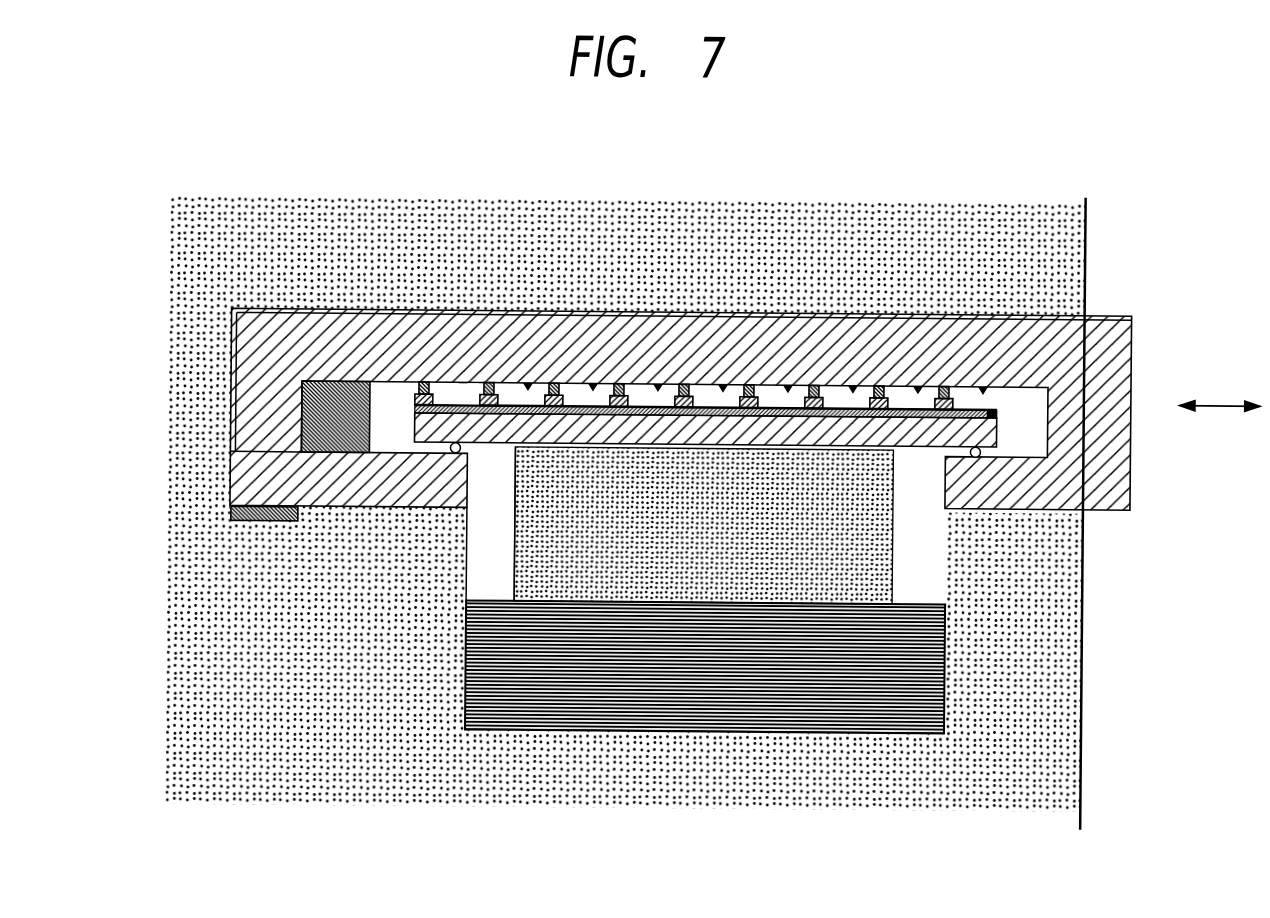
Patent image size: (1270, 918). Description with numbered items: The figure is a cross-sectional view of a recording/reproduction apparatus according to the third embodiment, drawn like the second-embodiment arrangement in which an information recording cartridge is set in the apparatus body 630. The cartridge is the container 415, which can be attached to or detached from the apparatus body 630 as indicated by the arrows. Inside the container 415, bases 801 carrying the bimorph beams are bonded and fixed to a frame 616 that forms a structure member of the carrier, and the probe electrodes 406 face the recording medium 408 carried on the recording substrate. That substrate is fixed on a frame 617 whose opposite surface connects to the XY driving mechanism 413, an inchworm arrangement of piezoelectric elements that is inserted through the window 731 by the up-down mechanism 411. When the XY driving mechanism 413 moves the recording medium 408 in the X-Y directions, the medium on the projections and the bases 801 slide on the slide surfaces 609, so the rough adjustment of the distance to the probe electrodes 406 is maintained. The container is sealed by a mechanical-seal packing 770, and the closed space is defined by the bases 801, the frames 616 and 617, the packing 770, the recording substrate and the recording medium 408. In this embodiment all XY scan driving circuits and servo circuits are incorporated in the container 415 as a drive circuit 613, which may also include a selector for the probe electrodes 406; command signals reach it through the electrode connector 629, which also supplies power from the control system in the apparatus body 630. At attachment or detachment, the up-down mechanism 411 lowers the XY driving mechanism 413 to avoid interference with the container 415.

The probe electrodes 406 is at (474, 382).
The recording medium 408 is at (793, 392).
The up-down mechanism 411 is at (932, 675).
The XY driving mechanism 413 is at (893, 548).
The container 415 is at (1130, 287).
The slide surfaces 609 is at (938, 384).
The drive circuit 613 is at (328, 384).
The frame 616 is at (1111, 339).
The frame 617 is at (996, 429).
The electrode connector 629 is at (232, 521).
The apparatus body 630 is at (1050, 738).
The window 731 is at (468, 564).
The mechanical-seal packing 770 is at (450, 447).
The bases 801 is at (608, 392).